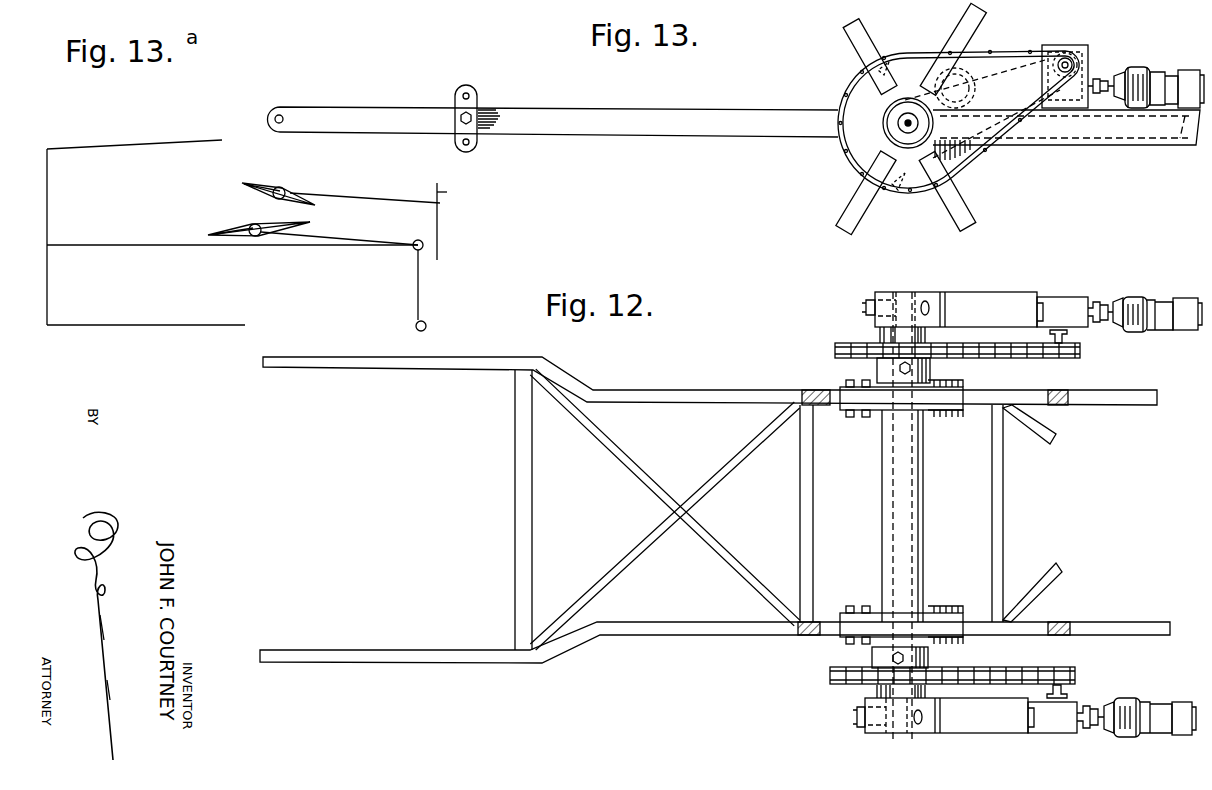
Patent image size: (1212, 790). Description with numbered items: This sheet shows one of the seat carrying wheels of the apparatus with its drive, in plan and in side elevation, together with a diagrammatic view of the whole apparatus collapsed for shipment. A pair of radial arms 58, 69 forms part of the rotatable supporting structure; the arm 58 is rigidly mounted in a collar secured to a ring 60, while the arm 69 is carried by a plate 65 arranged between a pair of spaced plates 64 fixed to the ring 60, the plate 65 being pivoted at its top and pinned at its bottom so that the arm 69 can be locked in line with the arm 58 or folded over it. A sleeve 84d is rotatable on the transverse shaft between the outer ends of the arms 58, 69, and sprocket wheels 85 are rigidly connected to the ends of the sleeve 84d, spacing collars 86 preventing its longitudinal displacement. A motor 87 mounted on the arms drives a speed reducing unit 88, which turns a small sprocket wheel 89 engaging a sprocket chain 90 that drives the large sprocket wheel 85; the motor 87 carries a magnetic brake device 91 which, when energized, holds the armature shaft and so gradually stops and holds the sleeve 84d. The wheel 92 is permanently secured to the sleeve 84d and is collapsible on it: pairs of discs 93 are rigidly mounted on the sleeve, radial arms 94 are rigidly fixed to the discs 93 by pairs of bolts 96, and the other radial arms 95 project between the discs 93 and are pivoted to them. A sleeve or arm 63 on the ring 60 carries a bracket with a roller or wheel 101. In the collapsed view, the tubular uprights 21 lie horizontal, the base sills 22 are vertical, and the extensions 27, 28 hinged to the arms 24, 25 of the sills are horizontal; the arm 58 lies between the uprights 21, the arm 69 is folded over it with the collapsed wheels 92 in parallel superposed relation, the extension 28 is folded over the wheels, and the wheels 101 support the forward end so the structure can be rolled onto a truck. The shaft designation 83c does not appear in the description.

In FIG. 13A, the upright 21 is at (184, 247).
In FIG. 13A, the horizontal base sill 22 is at (57, 230).
In FIG. 13A, the arm 24 is at (50, 308).
In FIG. 13A, the arm 25 is at (50, 203).
In FIG. 13A, the extension 27 is at (176, 323).
In FIG. 13A, the base extension 28 is at (141, 142).
In FIG. 13A, the radial arm 58 is at (379, 240).
In FIG. 13, the radial arm 58 is at (1095, 137).
In FIG. 12, the radial arm 58 is at (1012, 296).
In FIG. 13A, the ring 60 is at (413, 250).
In FIG. 13A, the sleeve 63 is at (420, 293).
In FIG. 13A, the spaced plate 64 is at (456, 221).
In FIG. 13A, the plate 65 is at (457, 194).
In FIG. 13A, the radial arm 69 is at (376, 203).
In FIG. 13, the shaft 83c is at (908, 133).
In FIG. 12, the shaft 83c is at (912, 537).
In FIG. 13, the sleeve 84d is at (885, 138).
In FIG. 12, the sleeve 84d is at (925, 500).
In FIG. 13, the sprocket wheel 85 is at (966, 90).
In FIG. 12, the sprocket wheel 85 is at (835, 351).
In FIG. 12, the spacing element or collar 86 is at (880, 334).
In FIG. 13, the motor 87 is at (1138, 72).
In FIG. 12, the motor 87 is at (1135, 300).
In FIG. 13, the speed reducing unit 88 is at (1088, 63).
In FIG. 12, the speed reducing unit 88 is at (1066, 300).
In FIG. 13, the small sprocket wheel 89 is at (1043, 68).
In FIG. 12, the small sprocket wheel 89 is at (1070, 350).
In FIG. 13, the sprocket chain 90 is at (981, 148).
In FIG. 12, the sprocket chain 90 is at (985, 356).
In FIG. 13, the magnetic brake device 91 is at (1192, 70).
In FIG. 12, the magnetic brake device 91 is at (1187, 298).
In FIG. 13A, the wheel 92 is at (296, 180).
In FIG. 12, the disc 93 is at (848, 398).
In FIG. 13A, the radial arm 94 is at (308, 198).
In FIG. 13, the radial arm 94 is at (690, 137).
In FIG. 12, the radial arm 94 is at (732, 391).
In FIG. 13A, the radial arm 95 is at (266, 188).
In FIG. 13, the radial arm 95 is at (856, 53).
In FIG. 12, the bolt 96 is at (869, 419).
In FIG. 13A, the roller or wheel 101 is at (429, 325).